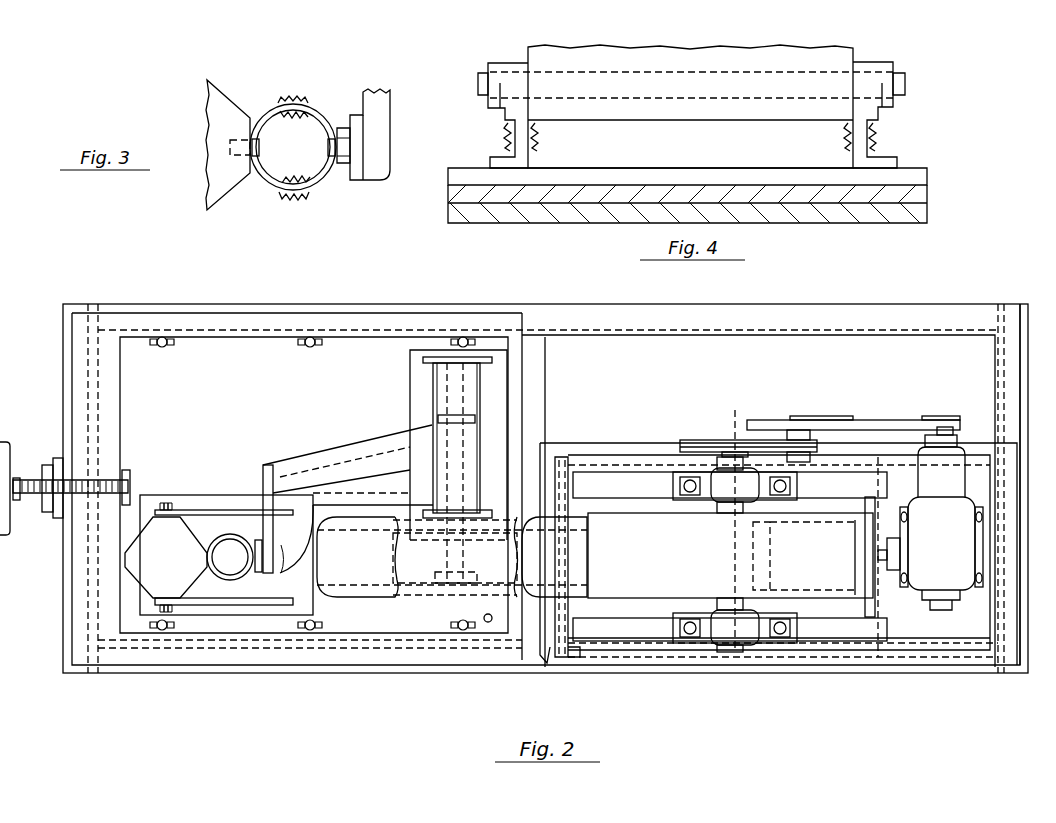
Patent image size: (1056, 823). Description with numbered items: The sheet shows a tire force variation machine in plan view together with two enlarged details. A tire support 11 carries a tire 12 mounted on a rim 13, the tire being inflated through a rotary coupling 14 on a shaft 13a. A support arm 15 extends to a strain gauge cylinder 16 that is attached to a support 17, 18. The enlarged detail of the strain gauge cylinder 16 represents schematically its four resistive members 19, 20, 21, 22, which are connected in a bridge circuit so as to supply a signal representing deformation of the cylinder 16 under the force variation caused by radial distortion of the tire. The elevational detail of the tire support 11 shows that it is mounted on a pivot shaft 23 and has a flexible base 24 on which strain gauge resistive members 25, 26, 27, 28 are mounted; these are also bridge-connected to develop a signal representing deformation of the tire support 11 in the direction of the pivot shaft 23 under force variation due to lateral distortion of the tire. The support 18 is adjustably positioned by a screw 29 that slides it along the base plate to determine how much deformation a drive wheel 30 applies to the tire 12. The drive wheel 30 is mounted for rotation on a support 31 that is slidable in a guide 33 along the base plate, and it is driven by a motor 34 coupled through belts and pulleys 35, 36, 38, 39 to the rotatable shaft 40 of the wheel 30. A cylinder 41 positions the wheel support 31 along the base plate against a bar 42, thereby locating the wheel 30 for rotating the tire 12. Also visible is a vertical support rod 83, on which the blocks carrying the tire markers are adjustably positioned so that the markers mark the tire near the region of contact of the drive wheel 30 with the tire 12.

In FIG. 4, the tire support 11 is at (840, 53).
In FIG. 2, the tire 12 is at (330, 592).
In FIG. 2, the rim 13 is at (472, 568).
In FIG. 2, the shaft 13a is at (463, 584).
In FIG. 2, the rotary coupling 14 is at (435, 592).
In FIG. 2, the support arm 15 is at (283, 546).
In FIG. 3, the strain gauge cylinder 16 is at (322, 184).
In FIG. 2, the strain gauge cylinder 16 is at (238, 574).
In FIG. 2, the support 17 is at (194, 521).
In FIG. 2, the support 18 is at (212, 509).
In FIG. 3, the resistive member 19 is at (308, 96).
In FIG. 3, the resistive member 20 is at (300, 118).
In FIG. 3, the resistive member 21 is at (288, 178).
In FIG. 3, the resistive member 22 is at (295, 203).
In FIG. 4, the pivot shaft 23 is at (907, 84).
In FIG. 4, the flexible base 24 is at (880, 150).
In FIG. 4, the strain gauge resistive member 25 is at (503, 137).
In FIG. 4, the strain gauge resistive member 26 is at (539, 137).
In FIG. 4, the strain gauge resistive member 27 is at (844, 137).
In FIG. 4, the strain gauge resistive member 28 is at (877, 136).
In FIG. 2, the screw 29 is at (3, 440).
In FIG. 2, the drive wheel 30 is at (650, 514).
In FIG. 2, the wheel support 31 is at (598, 636).
In FIG. 2, the guide 33 is at (634, 673).
In FIG. 2, the motor 34 is at (930, 542).
In FIG. 2, the pulley 35 is at (895, 418).
In FIG. 2, the pulley 36 is at (817, 418).
In FIG. 2, the pulley 38 is at (727, 443).
In FIG. 2, the pulley 39 is at (737, 443).
In FIG. 2, the rotatable shaft 40 is at (717, 603).
In FIG. 2, the cylinder 41 is at (807, 591).
In FIG. 2, the bar 42 is at (546, 662).
In FIG. 2, the vertical support rod 83 is at (490, 623).